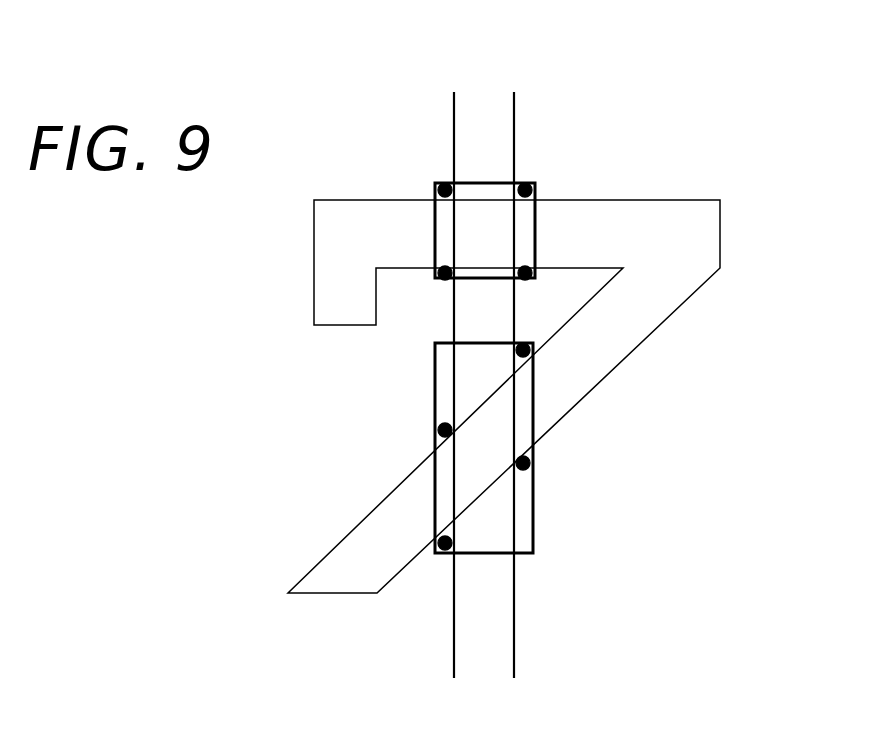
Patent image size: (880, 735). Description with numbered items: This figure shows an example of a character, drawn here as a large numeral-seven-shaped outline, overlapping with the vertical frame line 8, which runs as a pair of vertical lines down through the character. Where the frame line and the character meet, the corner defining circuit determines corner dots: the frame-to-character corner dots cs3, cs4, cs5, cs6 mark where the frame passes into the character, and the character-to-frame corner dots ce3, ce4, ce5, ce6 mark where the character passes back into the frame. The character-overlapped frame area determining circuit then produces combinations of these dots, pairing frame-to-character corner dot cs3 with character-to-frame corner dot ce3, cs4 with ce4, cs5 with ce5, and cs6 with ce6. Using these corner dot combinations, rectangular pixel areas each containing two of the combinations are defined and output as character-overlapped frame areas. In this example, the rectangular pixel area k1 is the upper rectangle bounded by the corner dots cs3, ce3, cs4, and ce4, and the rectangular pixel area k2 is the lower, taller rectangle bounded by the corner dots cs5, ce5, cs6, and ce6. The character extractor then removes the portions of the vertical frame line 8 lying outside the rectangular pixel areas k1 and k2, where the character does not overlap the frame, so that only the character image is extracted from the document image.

The vertical frame line 8 is at (495, 95).
The rectangular pixel area k1 is at (492, 187).
The rectangular pixel area k2 is at (525, 525).
The frame-to-character corner dot cs3 is at (435, 186).
The frame-to-character corner dot cs4 is at (533, 185).
The frame-to-character corner dot cs5 is at (438, 428).
The frame-to-character corner dot cs6 is at (532, 350).
The character-to-frame corner dot ce3 is at (443, 282).
The character-to-frame corner dot ce4 is at (527, 282).
The character-to-frame corner dot ce5 is at (436, 540).
The character-to-frame corner dot ce6 is at (532, 462).